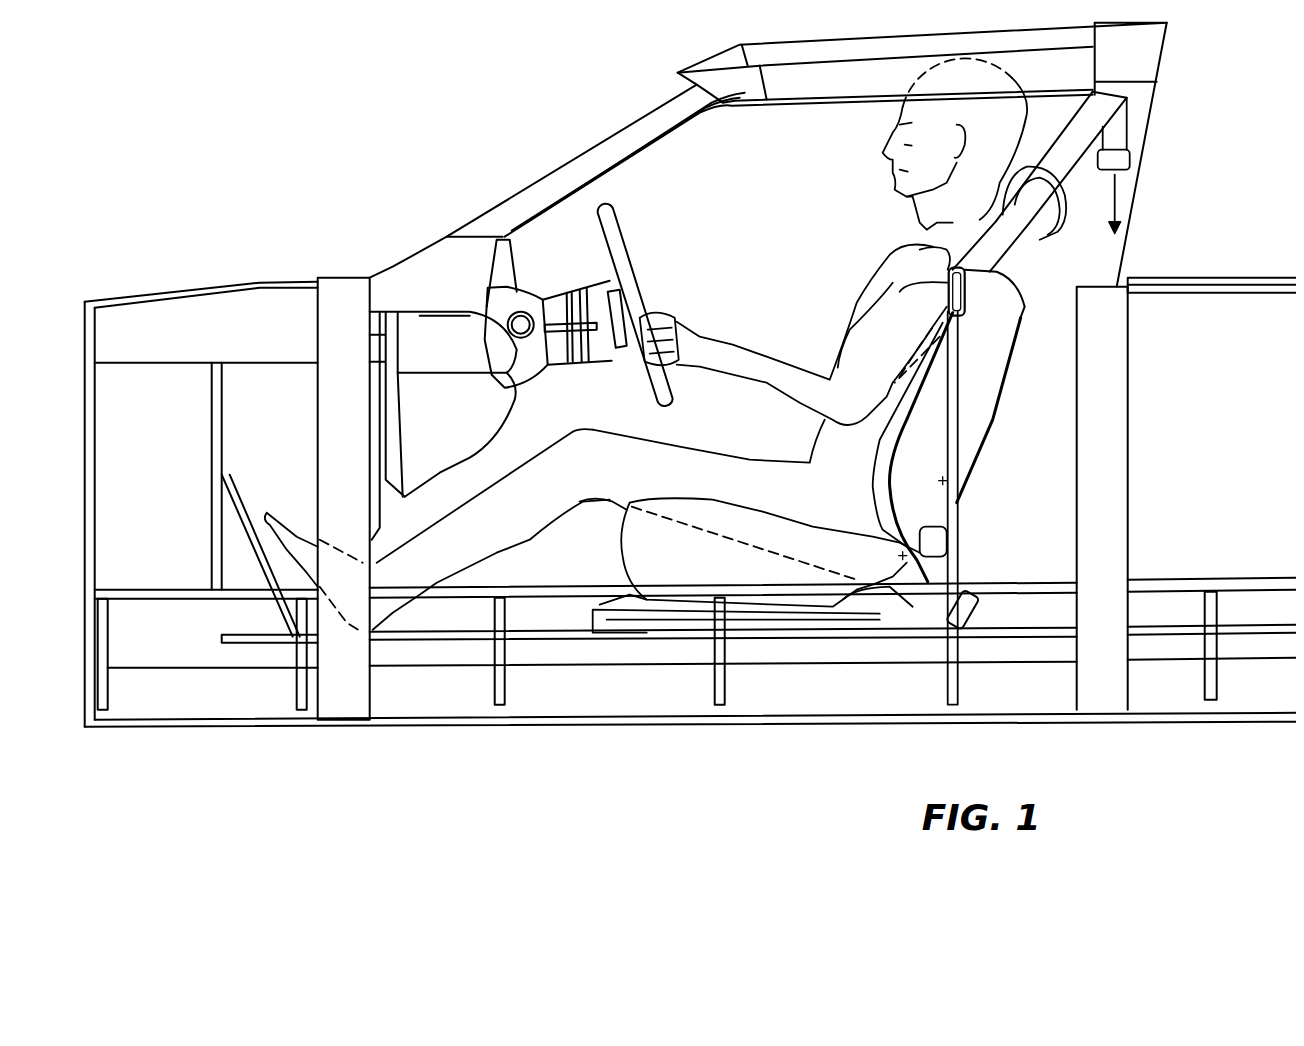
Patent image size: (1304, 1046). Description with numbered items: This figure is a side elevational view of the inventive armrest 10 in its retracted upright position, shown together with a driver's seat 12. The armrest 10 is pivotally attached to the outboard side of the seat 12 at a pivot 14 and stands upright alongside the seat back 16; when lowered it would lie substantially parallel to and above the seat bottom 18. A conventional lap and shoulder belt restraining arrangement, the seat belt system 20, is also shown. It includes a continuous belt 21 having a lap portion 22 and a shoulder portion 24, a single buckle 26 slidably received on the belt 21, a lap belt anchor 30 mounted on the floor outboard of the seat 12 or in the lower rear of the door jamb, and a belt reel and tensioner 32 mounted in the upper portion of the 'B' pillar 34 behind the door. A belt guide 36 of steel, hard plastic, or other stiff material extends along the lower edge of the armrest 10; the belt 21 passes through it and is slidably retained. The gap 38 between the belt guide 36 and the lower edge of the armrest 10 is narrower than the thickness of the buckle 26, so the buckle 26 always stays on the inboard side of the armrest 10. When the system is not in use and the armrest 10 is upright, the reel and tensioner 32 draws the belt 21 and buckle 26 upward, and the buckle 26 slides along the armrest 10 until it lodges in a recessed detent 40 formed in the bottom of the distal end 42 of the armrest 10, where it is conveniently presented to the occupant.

The armrest 10 is at (983, 403).
The driver's seat 12 is at (1035, 312).
The pivot 14 is at (967, 503).
The seat back 16 is at (1050, 272).
The seat bottom 18 is at (686, 576).
The seat belt system 20 is at (1143, 110).
The belt 21 is at (997, 222).
The lap portion 22 is at (983, 455).
The shoulder portion 24 is at (1075, 157).
The buckle 26 is at (900, 292).
The lap belt anchor 30 is at (980, 597).
The belt reel and tensioner 32 is at (1133, 162).
The 'B' pillar 34 is at (1100, 253).
The belt guide 36 is at (880, 433).
The gap 38 is at (952, 472).
The recessed detent 40 is at (1018, 360).
The distal end 42 is at (997, 351).